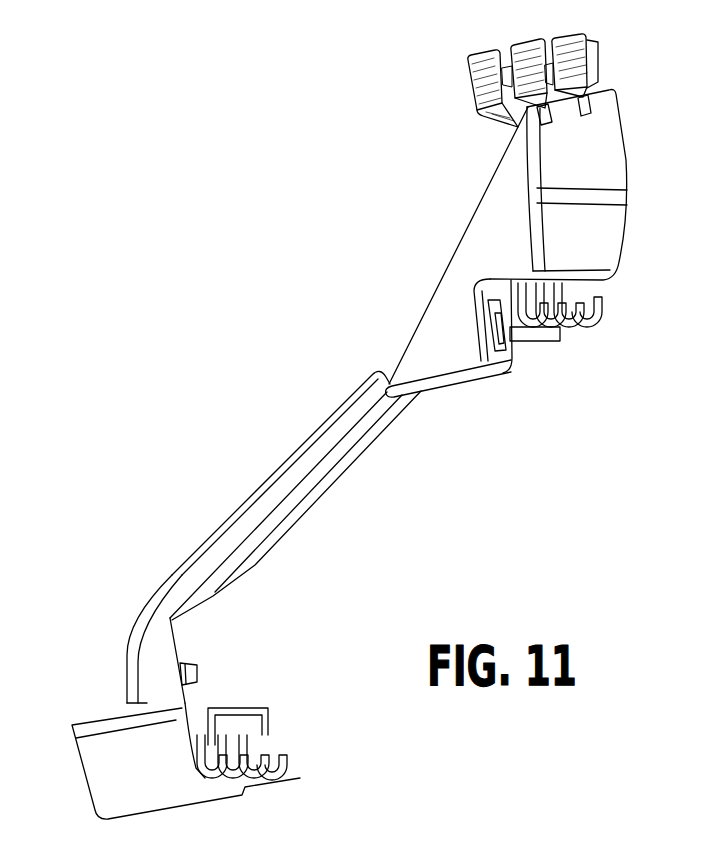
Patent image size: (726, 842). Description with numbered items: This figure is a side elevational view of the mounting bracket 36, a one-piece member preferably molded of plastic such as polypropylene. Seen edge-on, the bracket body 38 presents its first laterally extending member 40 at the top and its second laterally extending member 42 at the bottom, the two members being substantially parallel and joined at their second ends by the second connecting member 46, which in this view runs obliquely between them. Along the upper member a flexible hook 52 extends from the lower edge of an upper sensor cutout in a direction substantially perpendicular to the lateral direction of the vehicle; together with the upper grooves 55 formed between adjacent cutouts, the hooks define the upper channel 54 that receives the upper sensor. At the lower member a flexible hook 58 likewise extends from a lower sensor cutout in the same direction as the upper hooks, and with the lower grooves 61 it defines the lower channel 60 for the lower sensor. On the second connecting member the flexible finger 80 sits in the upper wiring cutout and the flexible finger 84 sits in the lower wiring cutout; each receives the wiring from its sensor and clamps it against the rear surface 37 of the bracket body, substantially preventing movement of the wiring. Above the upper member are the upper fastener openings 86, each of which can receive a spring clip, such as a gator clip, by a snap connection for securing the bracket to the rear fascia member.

The mounting bracket 36 is at (279, 468).
The rear surface 37 is at (332, 490).
The bracket body 38 is at (193, 562).
The first laterally extending member 40 is at (622, 137).
The second laterally extending member 42 is at (190, 763).
The second connecting member 46 is at (276, 550).
The flexible hook 52 is at (600, 318).
The upper channel 54 is at (582, 300).
The upper groove 55 is at (520, 300).
The flexible hook 58 is at (288, 776).
The lower channel 60 is at (105, 713).
The lower groove 61 is at (264, 742).
The flexible finger 80 is at (512, 343).
The flexible finger 84 is at (199, 668).
The upper fastener opening 86 is at (469, 82).